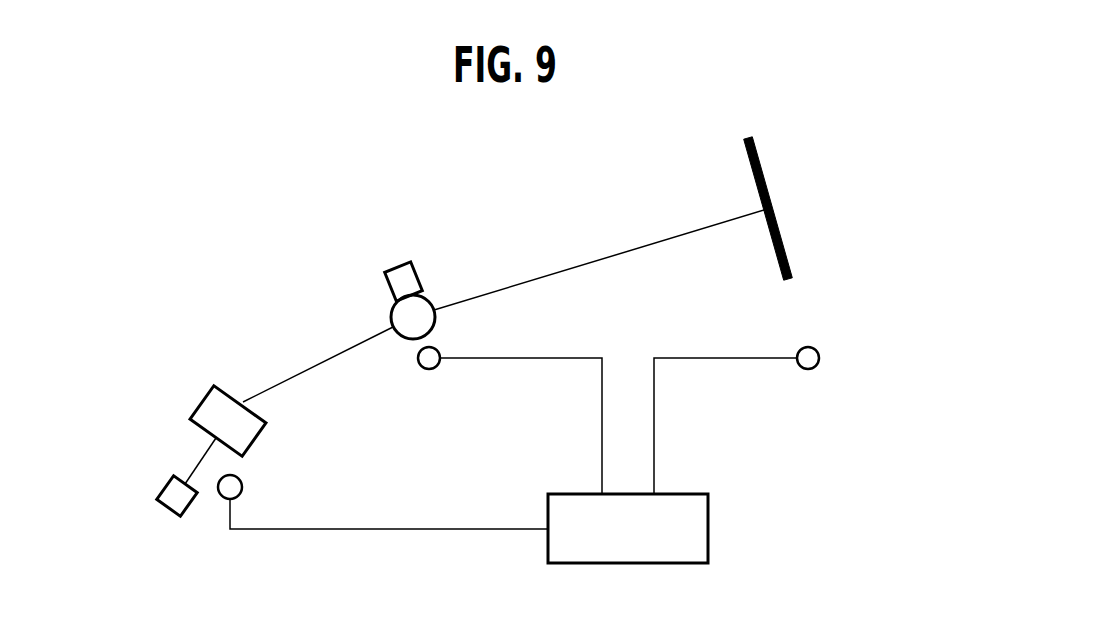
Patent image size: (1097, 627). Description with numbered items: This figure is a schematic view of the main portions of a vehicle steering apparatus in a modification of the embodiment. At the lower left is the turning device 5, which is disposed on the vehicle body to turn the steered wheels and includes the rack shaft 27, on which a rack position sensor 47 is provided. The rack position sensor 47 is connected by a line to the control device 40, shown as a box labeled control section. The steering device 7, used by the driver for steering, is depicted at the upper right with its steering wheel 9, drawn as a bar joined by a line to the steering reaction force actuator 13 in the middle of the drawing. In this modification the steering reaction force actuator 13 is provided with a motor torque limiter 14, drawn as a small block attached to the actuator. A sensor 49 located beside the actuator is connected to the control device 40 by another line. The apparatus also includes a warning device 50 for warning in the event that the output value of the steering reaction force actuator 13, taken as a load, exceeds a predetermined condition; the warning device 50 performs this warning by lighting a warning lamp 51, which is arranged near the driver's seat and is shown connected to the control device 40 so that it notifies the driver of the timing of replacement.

The turning device 5 is at (185, 392).
The steering device 7 is at (791, 181).
The steering wheel 9 is at (783, 244).
The steering reaction force actuator 13 is at (554, 274).
The motor torque limiter 14 is at (393, 265).
The rack shaft 27 is at (165, 484).
The control device 40 is at (709, 530).
The rack position sensor 47 is at (242, 487).
The deflection detector 49 is at (429, 370).
The warning device 50 is at (776, 401).
The warning lamp 51 is at (808, 370).